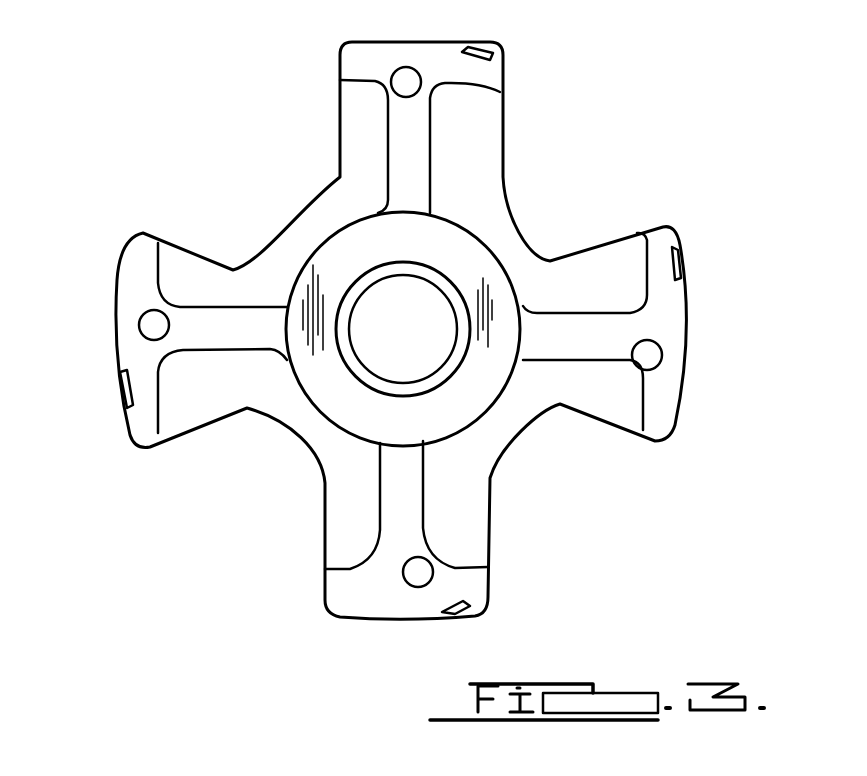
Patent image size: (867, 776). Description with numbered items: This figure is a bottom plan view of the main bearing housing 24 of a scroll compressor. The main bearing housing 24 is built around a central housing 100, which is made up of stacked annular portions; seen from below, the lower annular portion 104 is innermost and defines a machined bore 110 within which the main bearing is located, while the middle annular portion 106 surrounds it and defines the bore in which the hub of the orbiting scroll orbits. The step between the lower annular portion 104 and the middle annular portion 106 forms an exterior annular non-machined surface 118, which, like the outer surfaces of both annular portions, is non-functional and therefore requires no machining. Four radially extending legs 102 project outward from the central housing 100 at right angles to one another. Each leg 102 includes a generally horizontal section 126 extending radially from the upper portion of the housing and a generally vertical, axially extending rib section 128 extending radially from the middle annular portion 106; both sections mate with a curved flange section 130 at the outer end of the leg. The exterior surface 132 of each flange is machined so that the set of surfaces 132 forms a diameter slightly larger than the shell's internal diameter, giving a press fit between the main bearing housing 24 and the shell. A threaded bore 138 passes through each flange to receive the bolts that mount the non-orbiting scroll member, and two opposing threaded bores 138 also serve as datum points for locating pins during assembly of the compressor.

The main bearing housing 24 is at (577, 114).
The central housing 100 is at (316, 237).
The radially extending legs 102 is at (200, 422).
The lower annular portion 104 is at (433, 275).
The middle annular portion 106 is at (477, 405).
The machined bore 110 is at (365, 295).
The exterior annular non-machined surface 118 is at (350, 405).
The generally horizontal section 126 is at (615, 408).
The rib section 128 is at (557, 333).
The curved flange section 130 is at (663, 322).
The exterior surface 132 is at (117, 327).
The threaded bore 138 is at (653, 357).